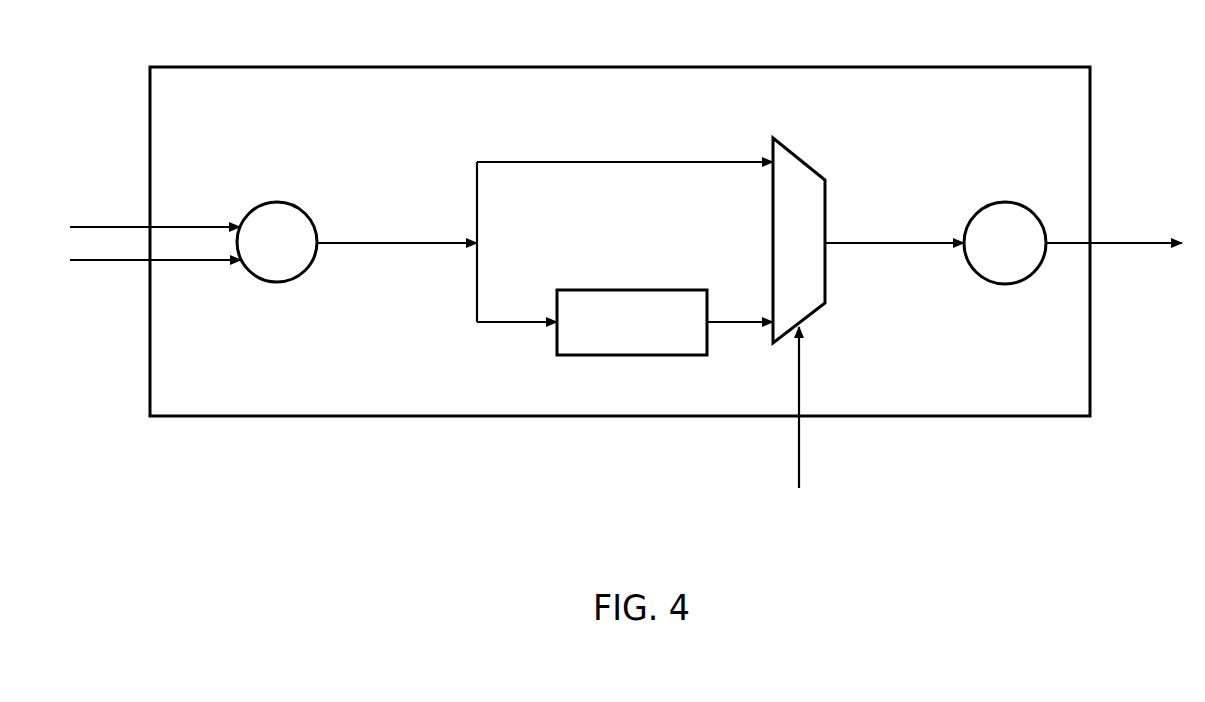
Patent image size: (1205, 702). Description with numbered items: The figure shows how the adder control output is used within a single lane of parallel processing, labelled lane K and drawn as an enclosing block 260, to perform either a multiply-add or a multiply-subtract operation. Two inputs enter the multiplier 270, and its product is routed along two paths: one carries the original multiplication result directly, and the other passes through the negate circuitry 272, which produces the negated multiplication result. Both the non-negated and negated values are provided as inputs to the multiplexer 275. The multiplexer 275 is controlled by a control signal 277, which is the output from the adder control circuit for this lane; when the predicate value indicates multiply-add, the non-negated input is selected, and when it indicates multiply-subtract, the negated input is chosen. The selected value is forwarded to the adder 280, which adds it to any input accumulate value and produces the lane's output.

The lane K processing block 260 is at (641, 47).
The multiplier 270 is at (305, 214).
The negate circuitry 272 is at (632, 290).
The multiplexer 275 is at (801, 161).
The adder control signal for lane K 277 is at (800, 440).
The adder 280 is at (1006, 202).